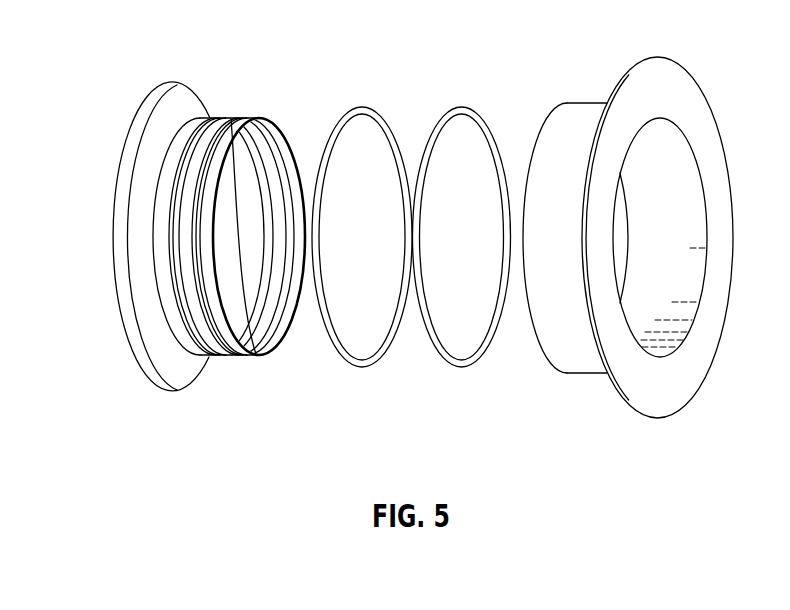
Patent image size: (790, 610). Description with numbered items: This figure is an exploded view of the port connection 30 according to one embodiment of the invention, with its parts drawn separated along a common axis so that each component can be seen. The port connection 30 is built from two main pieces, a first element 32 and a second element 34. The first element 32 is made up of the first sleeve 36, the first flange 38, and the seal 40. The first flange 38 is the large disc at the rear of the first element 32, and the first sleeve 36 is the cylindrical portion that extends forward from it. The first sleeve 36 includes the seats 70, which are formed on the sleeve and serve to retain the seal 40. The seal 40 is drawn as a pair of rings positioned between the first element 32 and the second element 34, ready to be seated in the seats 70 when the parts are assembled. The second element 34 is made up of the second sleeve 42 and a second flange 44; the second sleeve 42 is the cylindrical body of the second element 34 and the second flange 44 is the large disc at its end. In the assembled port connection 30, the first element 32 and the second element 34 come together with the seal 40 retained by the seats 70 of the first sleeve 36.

The port connection 30 is at (97, 43).
The first element 32 is at (229, 246).
The second element 34 is at (572, 384).
The first sleeve 36 is at (262, 118).
The first flange 38 is at (172, 83).
The seal 40 is at (383, 355).
The second sleeve 42 is at (582, 102).
The second flange 44 is at (643, 249).
The seats 70 is at (228, 116).